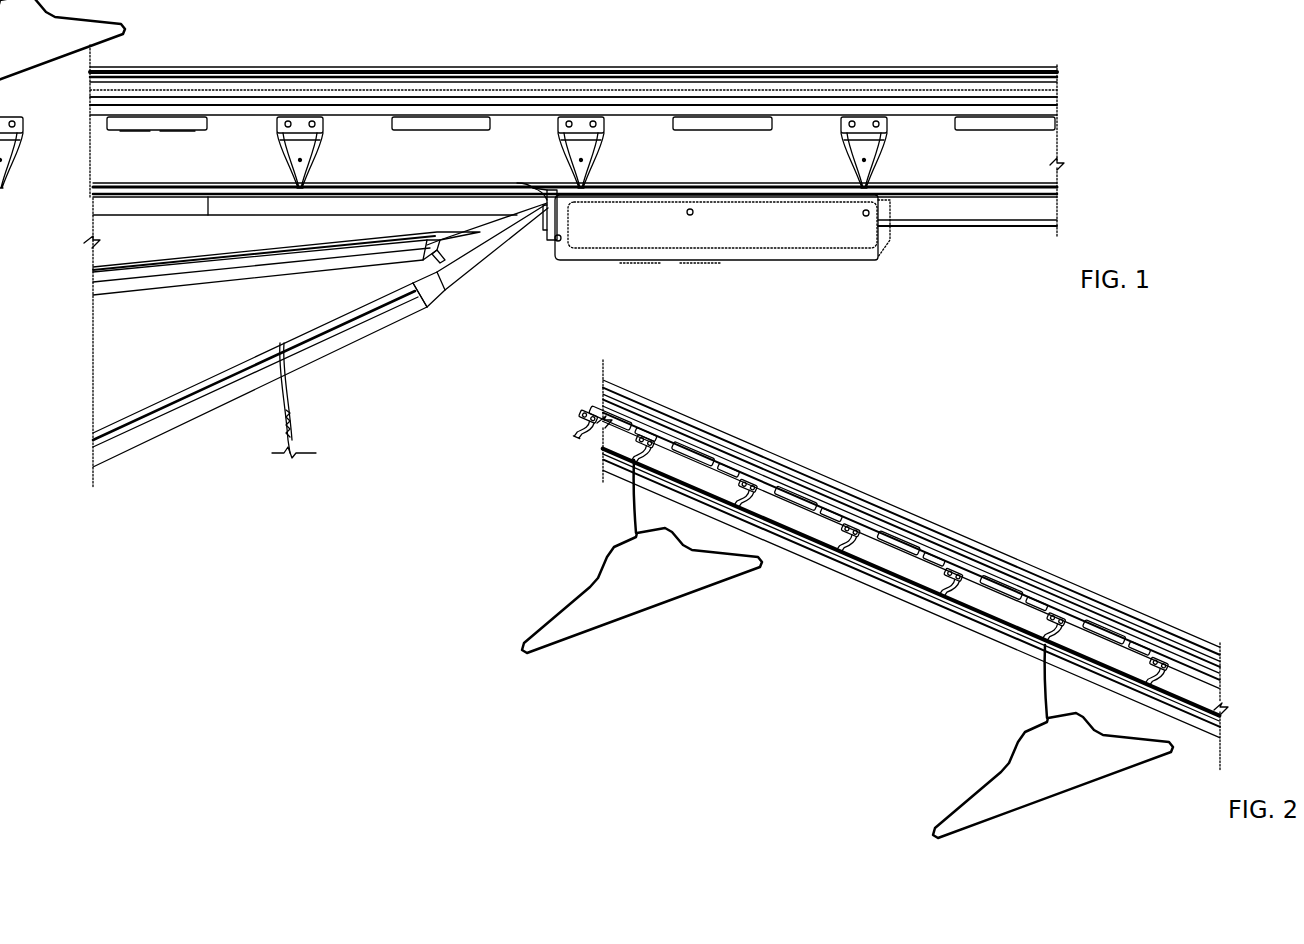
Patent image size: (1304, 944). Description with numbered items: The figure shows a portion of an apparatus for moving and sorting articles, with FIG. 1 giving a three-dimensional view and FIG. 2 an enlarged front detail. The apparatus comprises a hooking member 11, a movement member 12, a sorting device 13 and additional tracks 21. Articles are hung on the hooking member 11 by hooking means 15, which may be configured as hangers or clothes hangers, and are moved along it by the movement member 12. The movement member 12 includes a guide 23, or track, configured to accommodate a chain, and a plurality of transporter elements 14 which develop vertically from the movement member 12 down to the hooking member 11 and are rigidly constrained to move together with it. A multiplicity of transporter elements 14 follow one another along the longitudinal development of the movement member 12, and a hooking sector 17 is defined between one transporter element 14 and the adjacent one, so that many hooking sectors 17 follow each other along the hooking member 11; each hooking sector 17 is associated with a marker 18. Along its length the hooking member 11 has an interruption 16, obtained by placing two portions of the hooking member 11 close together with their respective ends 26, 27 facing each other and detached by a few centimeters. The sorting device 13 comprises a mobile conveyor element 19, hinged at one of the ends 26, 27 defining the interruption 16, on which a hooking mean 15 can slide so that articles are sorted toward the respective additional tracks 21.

In FIG. 1, the hooking member 11 is at (180, 224).
In FIG. 2, the hooking member 11 is at (911, 593).
In FIG. 1, the movement member 12 is at (598, 64).
In FIG. 2, the movement member 12 is at (911, 565).
In FIG. 1, the sorting device 13 is at (640, 268).
In FIG. 1, the transporter element 14 is at (305, 160).
In FIG. 2, the transporter element 14 is at (645, 430).
In FIG. 2, the hooking means 15 is at (650, 608).
In FIG. 1, the interruption 16 is at (528, 178).
In FIG. 1, the hooking sector 17 is at (312, 188).
In FIG. 2, the hooking sector 17 is at (745, 522).
In FIG. 1, the marker 18 is at (150, 120).
In FIG. 2, the marker 18 is at (690, 440).
In FIG. 1, the mobile conveyor element 19 is at (538, 230).
In FIG. 1, the additional track 21 is at (190, 300).
In FIG. 1, the guide 23 is at (300, 90).
In FIG. 1, the end 26 is at (543, 204).
In FIG. 1, the end 27 is at (548, 188).